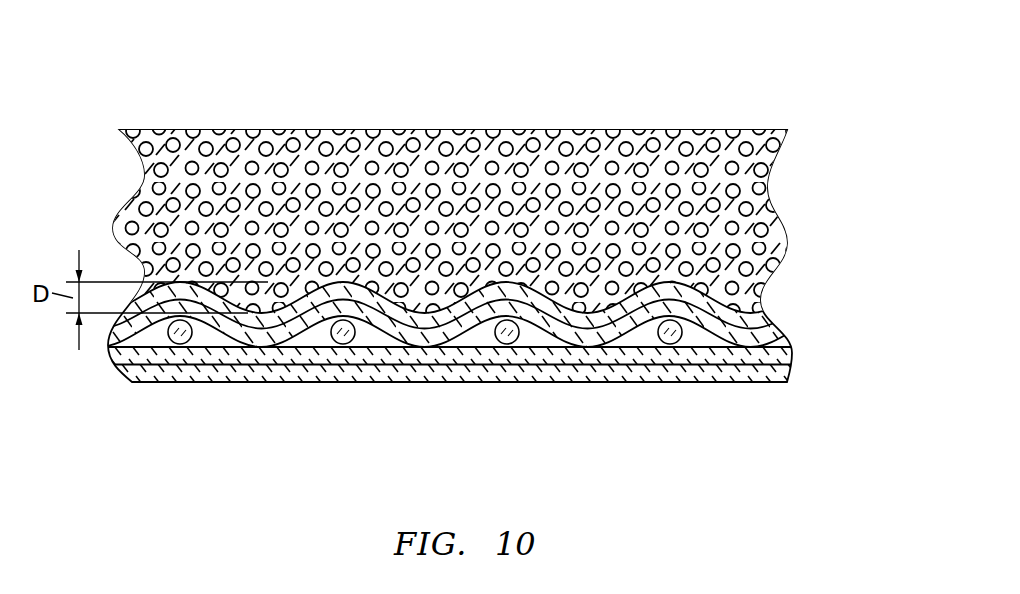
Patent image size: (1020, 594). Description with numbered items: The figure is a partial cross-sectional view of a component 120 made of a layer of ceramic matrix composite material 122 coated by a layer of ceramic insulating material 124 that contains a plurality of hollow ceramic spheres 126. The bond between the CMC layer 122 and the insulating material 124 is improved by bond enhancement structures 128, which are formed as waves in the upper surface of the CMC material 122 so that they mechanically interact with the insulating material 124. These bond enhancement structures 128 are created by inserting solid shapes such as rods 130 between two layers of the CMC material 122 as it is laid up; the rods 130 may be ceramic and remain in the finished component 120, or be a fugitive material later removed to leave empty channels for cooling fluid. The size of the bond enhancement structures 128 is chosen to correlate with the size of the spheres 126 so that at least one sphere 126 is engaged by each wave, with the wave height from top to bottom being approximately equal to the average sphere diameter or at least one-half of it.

The component 120 is at (184, 55).
The layer of ceramic matrix composite material 122 is at (501, 297).
The layer of ceramic insulating material 124 is at (501, 194).
The hollow ceramic spheres 126 is at (503, 162).
The bond enhancement structures 128 is at (387, 310).
The rods 130 is at (667, 340).